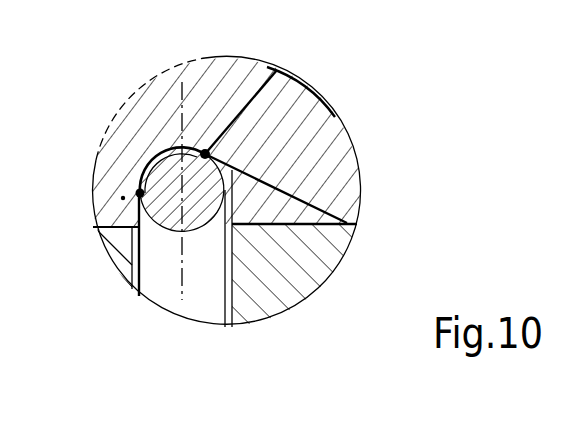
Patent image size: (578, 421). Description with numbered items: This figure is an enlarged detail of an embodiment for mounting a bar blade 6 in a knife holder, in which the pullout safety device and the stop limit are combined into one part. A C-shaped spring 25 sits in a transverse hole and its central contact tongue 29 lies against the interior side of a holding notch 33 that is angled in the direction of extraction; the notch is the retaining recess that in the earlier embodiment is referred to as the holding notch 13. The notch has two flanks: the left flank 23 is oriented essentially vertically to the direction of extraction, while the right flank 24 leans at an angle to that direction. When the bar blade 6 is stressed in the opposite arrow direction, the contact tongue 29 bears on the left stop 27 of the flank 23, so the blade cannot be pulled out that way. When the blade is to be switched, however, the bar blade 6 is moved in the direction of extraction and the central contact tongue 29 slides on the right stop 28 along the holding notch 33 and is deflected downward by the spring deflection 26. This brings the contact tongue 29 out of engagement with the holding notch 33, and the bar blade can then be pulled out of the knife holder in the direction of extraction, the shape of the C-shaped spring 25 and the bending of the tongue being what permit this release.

The bar blade 6 is at (297, 142).
The holding notch 13 is at (290, 197).
The left flank 23 is at (143, 176).
The right flank 24 is at (245, 172).
The C-shaped spring 25 is at (171, 207).
The spring deflection 26 is at (183, 268).
The left stop 27 is at (123, 198).
The right stop 28 is at (205, 154).
The central contact tongue 29 is at (300, 227).
The holding notch 33 is at (155, 150).